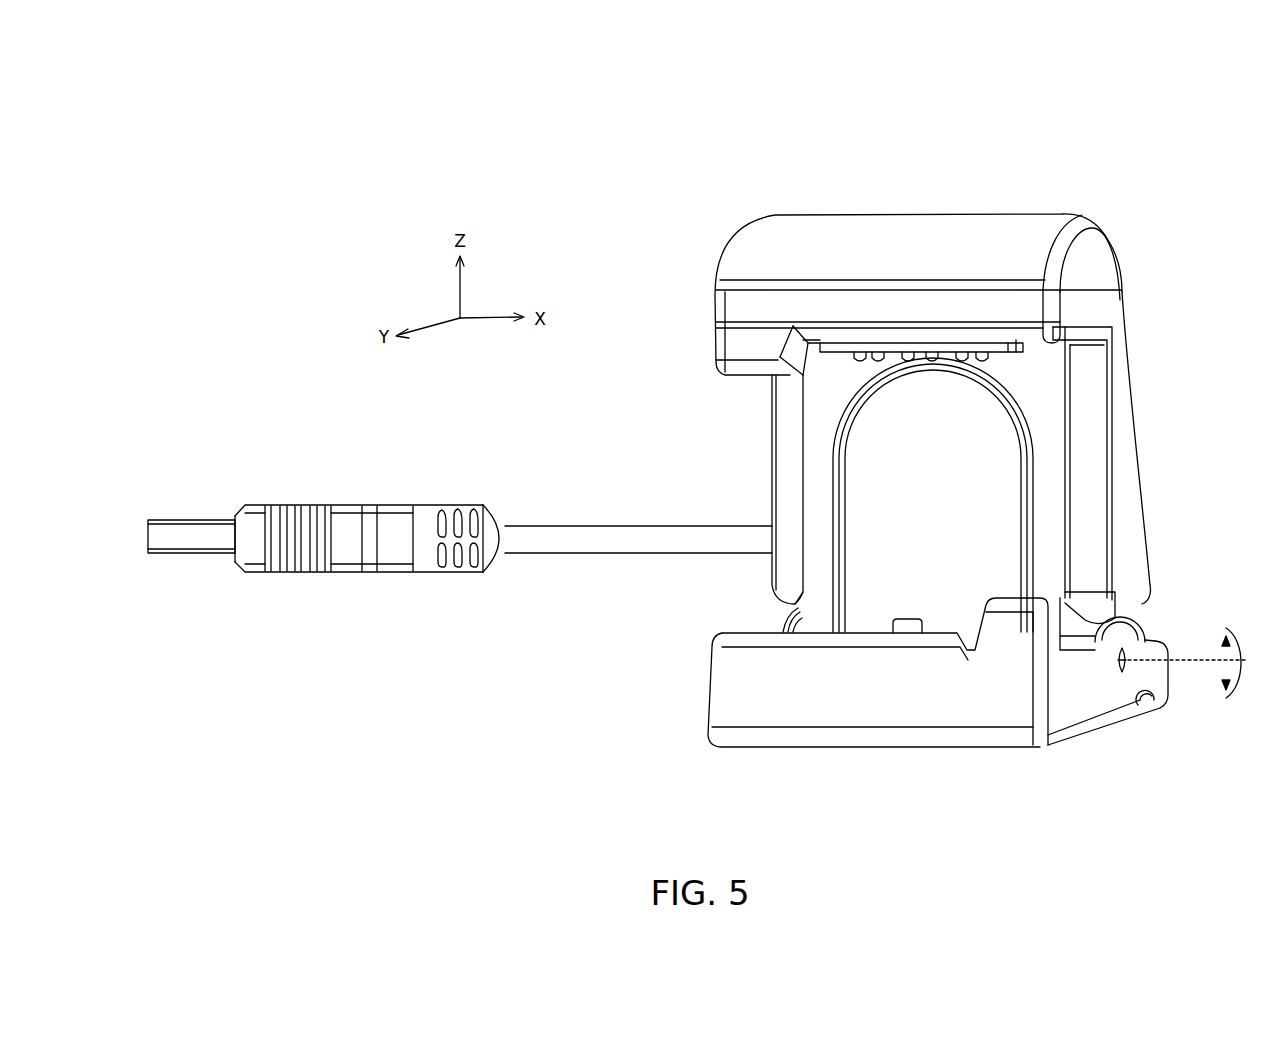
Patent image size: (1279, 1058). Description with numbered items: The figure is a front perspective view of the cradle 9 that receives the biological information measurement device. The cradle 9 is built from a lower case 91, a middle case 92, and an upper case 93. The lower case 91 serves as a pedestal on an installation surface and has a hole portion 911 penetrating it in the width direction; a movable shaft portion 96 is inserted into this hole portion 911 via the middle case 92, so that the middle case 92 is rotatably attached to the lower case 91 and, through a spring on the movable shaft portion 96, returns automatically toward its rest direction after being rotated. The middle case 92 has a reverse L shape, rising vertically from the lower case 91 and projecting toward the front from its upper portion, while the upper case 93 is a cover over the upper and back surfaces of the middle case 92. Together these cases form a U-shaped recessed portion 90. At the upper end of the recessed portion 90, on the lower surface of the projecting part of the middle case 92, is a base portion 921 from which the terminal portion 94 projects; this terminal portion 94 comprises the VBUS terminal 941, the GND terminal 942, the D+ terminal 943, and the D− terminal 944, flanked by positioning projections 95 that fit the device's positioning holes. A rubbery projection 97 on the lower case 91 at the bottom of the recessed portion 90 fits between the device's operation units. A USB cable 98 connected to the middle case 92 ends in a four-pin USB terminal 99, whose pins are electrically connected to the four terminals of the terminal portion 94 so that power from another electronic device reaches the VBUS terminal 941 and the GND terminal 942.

The cradle 9 is at (1112, 143).
The recessed portion 90 is at (715, 592).
The lower case 91 is at (901, 747).
The hole portion 911 is at (1137, 676).
The middle case 92 is at (1136, 426).
The base portion 921 is at (1026, 352).
The upper case 93 is at (935, 215).
The terminal portion 94 is at (1020, 452).
The VBUS terminal 941 is at (879, 362).
The GND terminal 942 is at (963, 362).
The D+ terminal 943 is at (909, 362).
The D− terminal 944 is at (933, 362).
The positioning projections 95 is at (856, 356).
The movable shaft portion 96 is at (1130, 652).
The rubbery projection 97 is at (907, 617).
The USB cable 98 is at (598, 525).
The USB terminal 99 is at (255, 509).